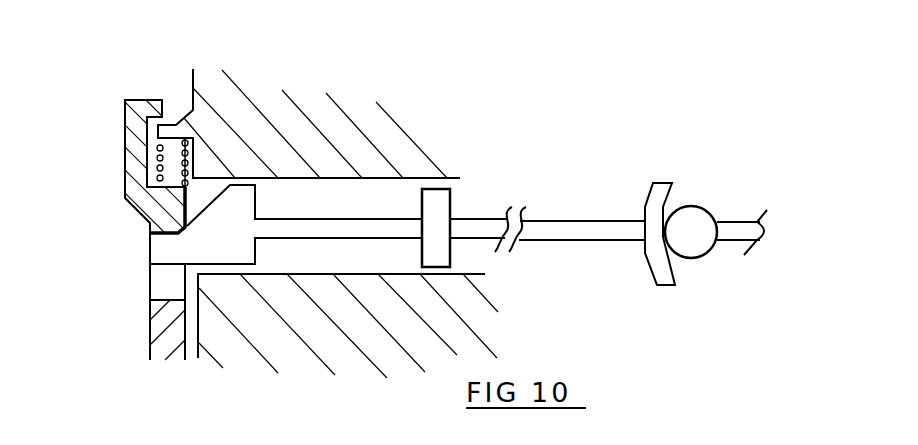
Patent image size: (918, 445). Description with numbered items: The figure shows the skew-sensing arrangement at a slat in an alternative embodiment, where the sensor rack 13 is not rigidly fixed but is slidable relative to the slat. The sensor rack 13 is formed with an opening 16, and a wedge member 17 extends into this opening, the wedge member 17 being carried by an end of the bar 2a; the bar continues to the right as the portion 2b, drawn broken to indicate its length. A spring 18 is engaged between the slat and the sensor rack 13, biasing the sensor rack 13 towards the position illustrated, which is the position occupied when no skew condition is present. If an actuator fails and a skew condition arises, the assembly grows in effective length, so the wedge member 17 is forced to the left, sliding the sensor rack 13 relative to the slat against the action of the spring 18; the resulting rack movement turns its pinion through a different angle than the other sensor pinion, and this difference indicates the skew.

The bar 2a is at (331, 200).
The valve stem second portion with ball end 2b is at (746, 198).
The sensor rack 13 is at (168, 334).
The opening 16 is at (165, 285).
The wedge member 17 is at (184, 250).
The spring 18 is at (157, 156).